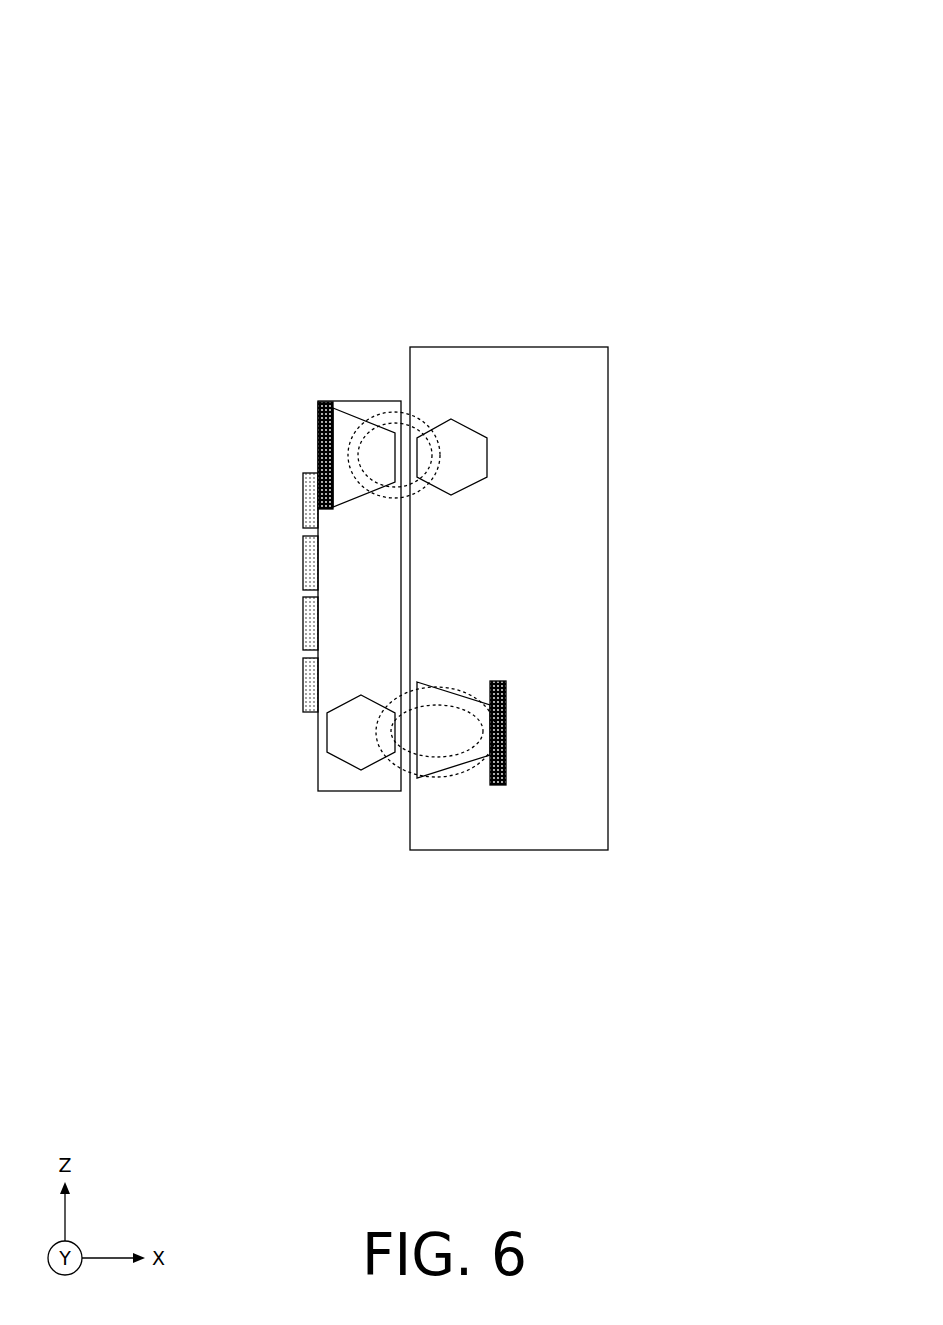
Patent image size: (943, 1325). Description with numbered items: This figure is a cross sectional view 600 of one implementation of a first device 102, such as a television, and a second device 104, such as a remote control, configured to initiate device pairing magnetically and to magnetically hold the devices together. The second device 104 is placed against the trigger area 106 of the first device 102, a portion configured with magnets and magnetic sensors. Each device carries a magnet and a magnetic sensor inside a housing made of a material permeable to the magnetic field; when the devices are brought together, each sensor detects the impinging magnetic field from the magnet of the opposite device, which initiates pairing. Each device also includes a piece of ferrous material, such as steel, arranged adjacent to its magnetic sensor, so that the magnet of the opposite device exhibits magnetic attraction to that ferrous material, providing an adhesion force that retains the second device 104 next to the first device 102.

The cross sectional view 600 is at (745, 44).
The first device 102 is at (561, 560).
The second device 104 is at (295, 659).
The trigger area 106 is at (295, 802).